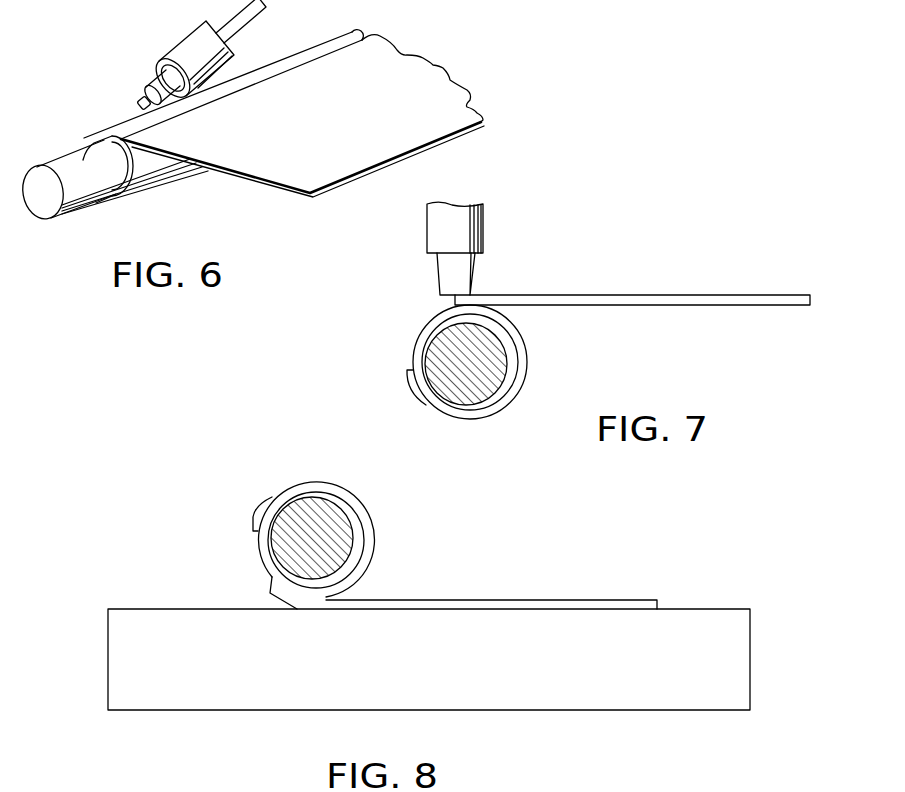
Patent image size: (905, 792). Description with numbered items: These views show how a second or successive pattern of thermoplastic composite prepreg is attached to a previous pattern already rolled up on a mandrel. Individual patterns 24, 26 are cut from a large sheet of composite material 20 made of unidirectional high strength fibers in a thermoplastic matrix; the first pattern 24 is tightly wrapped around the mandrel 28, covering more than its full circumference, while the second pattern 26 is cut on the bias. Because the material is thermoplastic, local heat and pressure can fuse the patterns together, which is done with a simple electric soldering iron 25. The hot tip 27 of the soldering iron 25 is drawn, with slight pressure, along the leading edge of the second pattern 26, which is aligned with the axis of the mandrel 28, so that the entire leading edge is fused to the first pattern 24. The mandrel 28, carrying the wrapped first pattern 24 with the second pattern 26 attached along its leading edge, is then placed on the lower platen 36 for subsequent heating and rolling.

In FIG. 8, the sheet of composite material 20 is at (278, 507).
In FIG. 6, the first pattern 24 is at (146, 176).
In FIG. 7, the first pattern 24 is at (477, 425).
In FIG. 8, the first pattern 24 is at (295, 483).
In FIG. 6, the soldering iron 25 is at (160, 39).
In FIG. 7, the soldering iron 25 is at (427, 241).
In FIG. 6, the second pattern 26 is at (343, 165).
In FIG. 7, the second pattern 26 is at (632, 300).
In FIG. 8, the second pattern 26 is at (465, 597).
In FIG. 6, the hot tip 27 is at (143, 99).
In FIG. 7, the hot tip 27 is at (465, 270).
In FIG. 6, the mandrel 28 is at (36, 205).
In FIG. 7, the mandrel 28 is at (427, 357).
In FIG. 8, the lower platen 36 is at (755, 663).